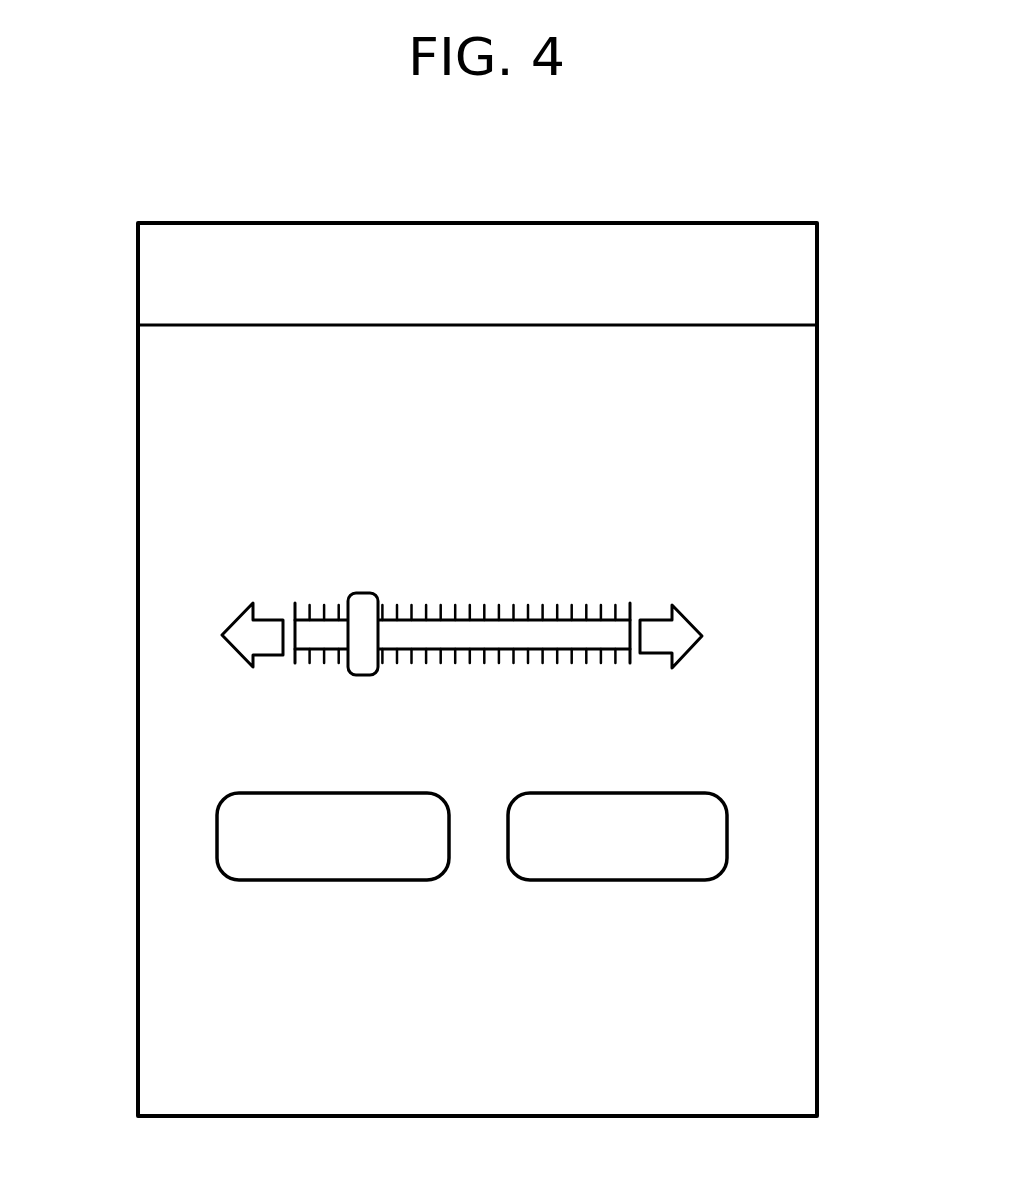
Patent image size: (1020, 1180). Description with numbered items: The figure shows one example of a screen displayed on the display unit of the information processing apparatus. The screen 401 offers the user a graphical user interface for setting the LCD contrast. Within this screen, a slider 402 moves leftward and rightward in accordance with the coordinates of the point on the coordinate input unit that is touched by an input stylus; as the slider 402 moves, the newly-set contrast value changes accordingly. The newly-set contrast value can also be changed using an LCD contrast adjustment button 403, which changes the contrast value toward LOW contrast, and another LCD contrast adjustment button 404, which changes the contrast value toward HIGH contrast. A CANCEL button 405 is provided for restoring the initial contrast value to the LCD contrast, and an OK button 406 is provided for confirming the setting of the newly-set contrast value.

The screen 401 is at (805, 413).
The slider 402 is at (360, 593).
The LCD contrast adjustment button 403 is at (237, 623).
The LCD contrast adjustment button 404 is at (695, 628).
The CANCEL button 405 is at (217, 828).
The OK button 406 is at (727, 828).